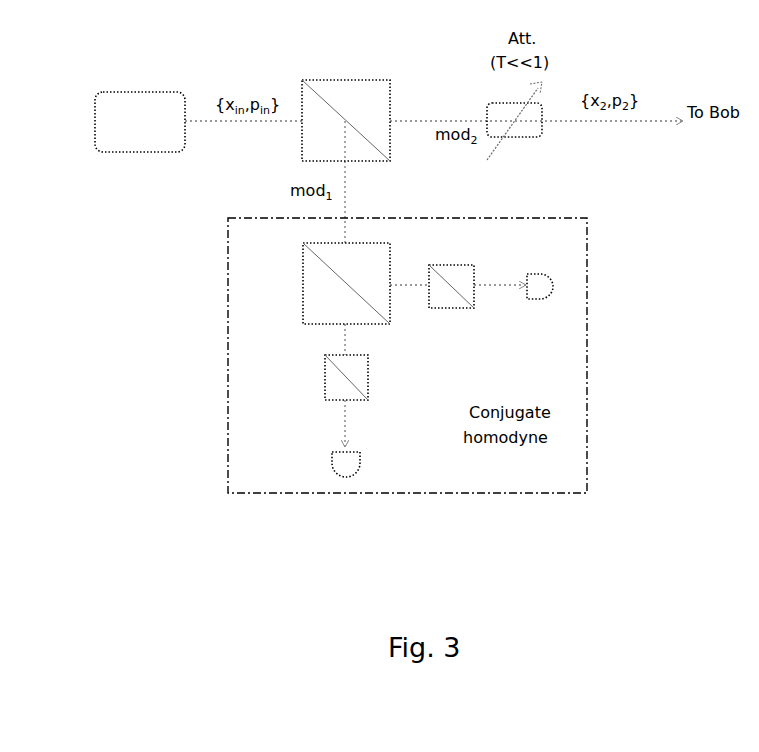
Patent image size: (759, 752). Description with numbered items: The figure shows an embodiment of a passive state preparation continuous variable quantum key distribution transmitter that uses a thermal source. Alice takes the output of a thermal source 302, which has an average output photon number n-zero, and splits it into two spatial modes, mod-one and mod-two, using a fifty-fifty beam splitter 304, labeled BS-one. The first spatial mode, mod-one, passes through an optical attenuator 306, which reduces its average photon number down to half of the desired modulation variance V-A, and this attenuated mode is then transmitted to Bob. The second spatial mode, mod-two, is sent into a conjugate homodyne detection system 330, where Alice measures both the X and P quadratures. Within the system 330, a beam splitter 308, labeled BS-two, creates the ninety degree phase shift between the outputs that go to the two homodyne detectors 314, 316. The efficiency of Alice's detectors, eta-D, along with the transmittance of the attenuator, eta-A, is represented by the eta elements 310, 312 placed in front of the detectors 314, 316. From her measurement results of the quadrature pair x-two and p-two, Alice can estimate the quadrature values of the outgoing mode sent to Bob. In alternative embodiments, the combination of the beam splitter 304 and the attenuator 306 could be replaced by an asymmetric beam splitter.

The thermal source 302 is at (100, 92).
The 50:50 beam splitter 304 is at (325, 80).
The optical attenuator 306 is at (540, 136).
The beam splitter 308 is at (303, 250).
The detector efficiency eta 310 is at (368, 368).
The detector efficiency eta 312 is at (474, 296).
The homodyne detector 314 is at (360, 457).
The homodyne detector 316 is at (554, 287).
The conjugate homodyne detection system 330 is at (588, 440).